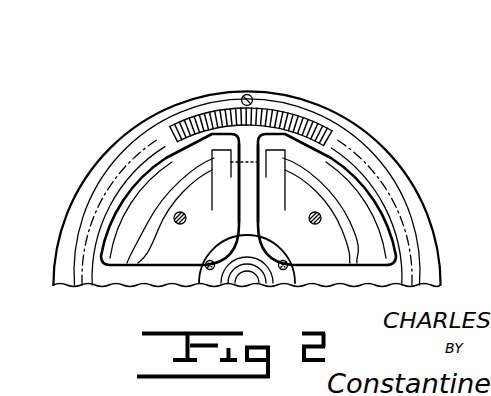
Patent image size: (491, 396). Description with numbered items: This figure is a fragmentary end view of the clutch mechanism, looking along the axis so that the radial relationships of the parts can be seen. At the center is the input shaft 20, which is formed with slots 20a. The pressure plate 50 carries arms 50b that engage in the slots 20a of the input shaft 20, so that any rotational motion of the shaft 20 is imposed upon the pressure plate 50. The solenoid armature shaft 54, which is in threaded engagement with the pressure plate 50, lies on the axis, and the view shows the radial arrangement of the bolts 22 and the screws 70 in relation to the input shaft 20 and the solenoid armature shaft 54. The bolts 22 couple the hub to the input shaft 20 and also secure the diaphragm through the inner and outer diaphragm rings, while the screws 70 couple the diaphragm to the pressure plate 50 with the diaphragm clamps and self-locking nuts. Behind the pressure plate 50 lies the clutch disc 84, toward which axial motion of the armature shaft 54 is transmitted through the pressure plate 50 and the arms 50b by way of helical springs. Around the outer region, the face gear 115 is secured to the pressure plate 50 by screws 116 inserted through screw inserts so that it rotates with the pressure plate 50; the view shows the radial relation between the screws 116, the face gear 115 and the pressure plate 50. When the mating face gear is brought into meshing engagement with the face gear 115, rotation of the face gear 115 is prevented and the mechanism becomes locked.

The input shaft 20 is at (185, 175).
The slots 20a is at (187, 147).
The bolts 22 is at (175, 218).
The pressure plate 50 is at (338, 112).
The arms 50b is at (256, 190).
The solenoid armature shaft 54 is at (249, 276).
The screws 70 is at (206, 270).
The clutch disc 84 is at (315, 158).
The face gear 115 is at (266, 112).
The screws 116 is at (245, 94).